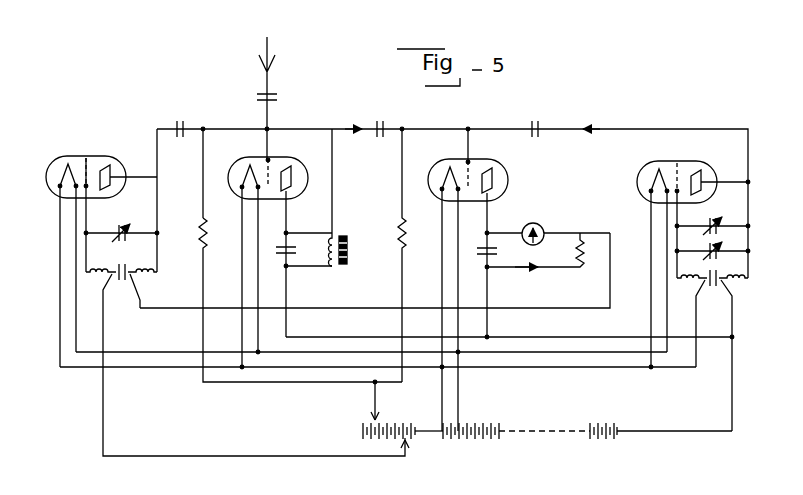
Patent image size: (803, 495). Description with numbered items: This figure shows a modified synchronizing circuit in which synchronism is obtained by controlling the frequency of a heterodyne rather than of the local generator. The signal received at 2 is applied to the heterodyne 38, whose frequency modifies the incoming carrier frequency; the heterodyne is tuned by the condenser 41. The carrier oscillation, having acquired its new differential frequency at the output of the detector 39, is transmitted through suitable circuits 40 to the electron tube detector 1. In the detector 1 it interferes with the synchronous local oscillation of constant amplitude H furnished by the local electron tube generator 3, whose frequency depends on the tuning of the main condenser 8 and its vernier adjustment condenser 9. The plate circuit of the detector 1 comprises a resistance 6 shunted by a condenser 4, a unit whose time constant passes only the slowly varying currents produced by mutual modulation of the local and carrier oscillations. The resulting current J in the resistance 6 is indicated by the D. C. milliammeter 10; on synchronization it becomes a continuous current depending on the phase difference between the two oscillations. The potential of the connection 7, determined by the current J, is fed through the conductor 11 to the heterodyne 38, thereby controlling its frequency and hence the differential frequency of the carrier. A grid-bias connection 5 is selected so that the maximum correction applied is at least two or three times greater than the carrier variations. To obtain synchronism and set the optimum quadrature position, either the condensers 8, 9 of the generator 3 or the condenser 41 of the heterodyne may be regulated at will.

The electron tube detector 1 is at (497, 170).
The signal receiving point 2 is at (270, 47).
The local electron tube generator 3 is at (706, 172).
The condenser 4 is at (484, 254).
The grid-bias connection 5 is at (408, 449).
The resistance 6 is at (542, 251).
The connection 7 is at (582, 233).
The main condenser 8 is at (541, 194).
The vernier adjustment condenser 9 is at (705, 221).
The D. C. milliammeter 10 is at (550, 220).
The conductor 11 is at (166, 306).
The heterodyne 38 is at (109, 168).
The detector 39 is at (292, 170).
The coupling circuits 40 is at (334, 234).
The heterodyne condenser 41 is at (108, 224).
The local oscillation amplitude H is at (585, 131).
The current in the resistance J is at (529, 281).